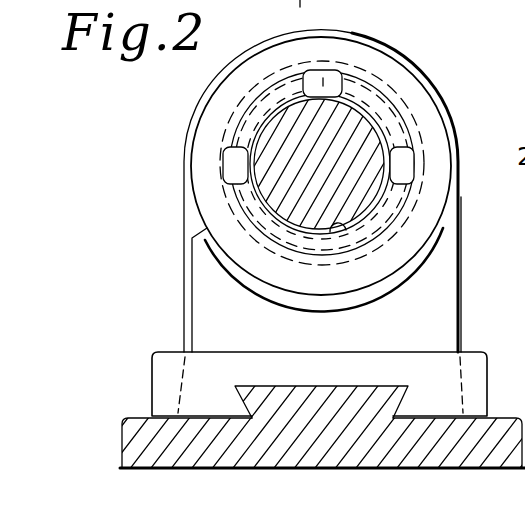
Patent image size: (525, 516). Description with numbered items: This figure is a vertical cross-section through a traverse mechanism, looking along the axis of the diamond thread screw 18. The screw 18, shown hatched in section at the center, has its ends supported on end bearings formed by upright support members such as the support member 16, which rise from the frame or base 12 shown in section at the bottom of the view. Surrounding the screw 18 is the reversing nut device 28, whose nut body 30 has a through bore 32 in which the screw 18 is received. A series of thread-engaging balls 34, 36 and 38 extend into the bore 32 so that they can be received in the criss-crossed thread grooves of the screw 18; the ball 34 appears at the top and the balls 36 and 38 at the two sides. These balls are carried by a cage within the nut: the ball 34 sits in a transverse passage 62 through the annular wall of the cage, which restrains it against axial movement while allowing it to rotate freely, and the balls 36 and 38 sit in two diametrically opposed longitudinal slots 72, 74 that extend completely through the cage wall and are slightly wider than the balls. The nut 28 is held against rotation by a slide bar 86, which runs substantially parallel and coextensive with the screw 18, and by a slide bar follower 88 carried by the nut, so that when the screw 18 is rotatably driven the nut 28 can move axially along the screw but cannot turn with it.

The frame or base 12 is at (147, 440).
The upright support member 16 is at (444, 226).
The diamond thread screw 18 is at (292, 130).
The reversing nut device 28 is at (150, 160).
The nut body 30 is at (260, 289).
The through bore 32 is at (344, 229).
The thread-engaging ball 34 is at (327, 68).
The thread-engaging ball 36 is at (408, 142).
The thread-engaging ball 38 is at (228, 178).
The transverse passage 62 is at (372, 76).
The longitudinal slot 72 is at (414, 207).
The longitudinal slot 74 is at (228, 220).
The slide bar 86 is at (268, 393).
The slide bar follower 88 is at (428, 366).